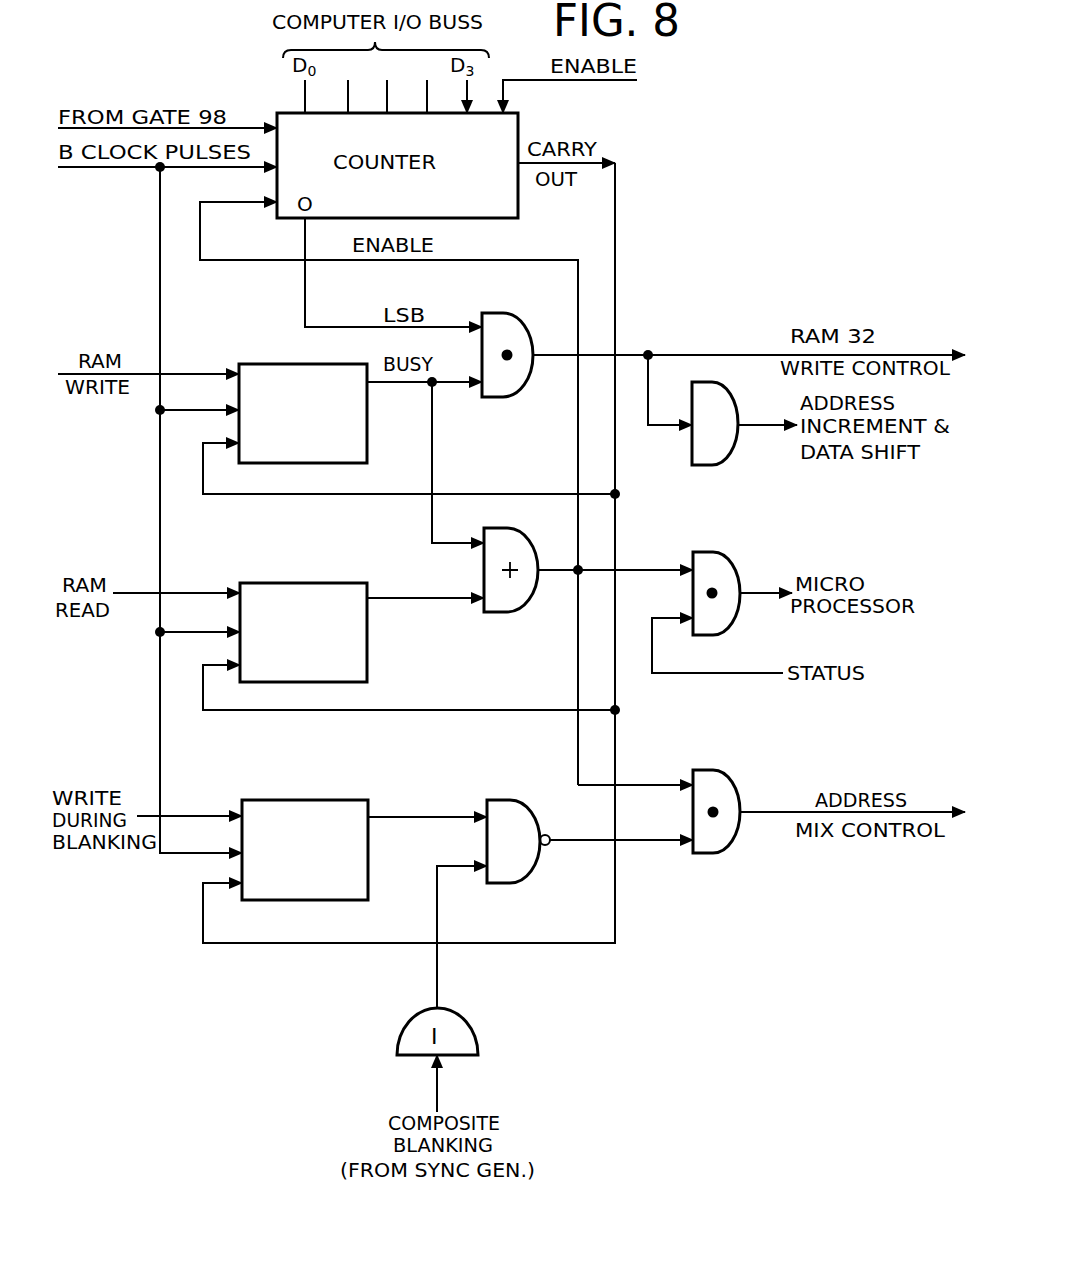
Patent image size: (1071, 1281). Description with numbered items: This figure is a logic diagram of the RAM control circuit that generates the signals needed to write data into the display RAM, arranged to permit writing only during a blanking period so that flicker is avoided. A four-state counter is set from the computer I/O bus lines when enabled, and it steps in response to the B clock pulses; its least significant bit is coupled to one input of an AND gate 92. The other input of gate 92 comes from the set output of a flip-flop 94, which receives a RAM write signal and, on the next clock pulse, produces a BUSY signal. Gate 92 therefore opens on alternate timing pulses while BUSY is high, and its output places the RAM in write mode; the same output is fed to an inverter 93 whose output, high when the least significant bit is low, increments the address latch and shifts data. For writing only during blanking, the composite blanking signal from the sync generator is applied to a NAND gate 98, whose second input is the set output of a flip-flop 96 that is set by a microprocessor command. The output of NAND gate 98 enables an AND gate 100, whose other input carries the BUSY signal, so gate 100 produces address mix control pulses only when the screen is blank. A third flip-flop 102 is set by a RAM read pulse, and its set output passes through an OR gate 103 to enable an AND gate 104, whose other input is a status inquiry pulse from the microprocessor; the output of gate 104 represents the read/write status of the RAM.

The AND gate 92 is at (513, 313).
The inverter 93 is at (697, 465).
The flip-flop 94 is at (288, 364).
The flip-flop 96 is at (313, 800).
The NAND gate 98 is at (515, 883).
The AND gate 100 is at (710, 853).
The flip-flop 102 is at (312, 583).
The OR gate 103 is at (545, 507).
The AND gate 104 is at (718, 552).